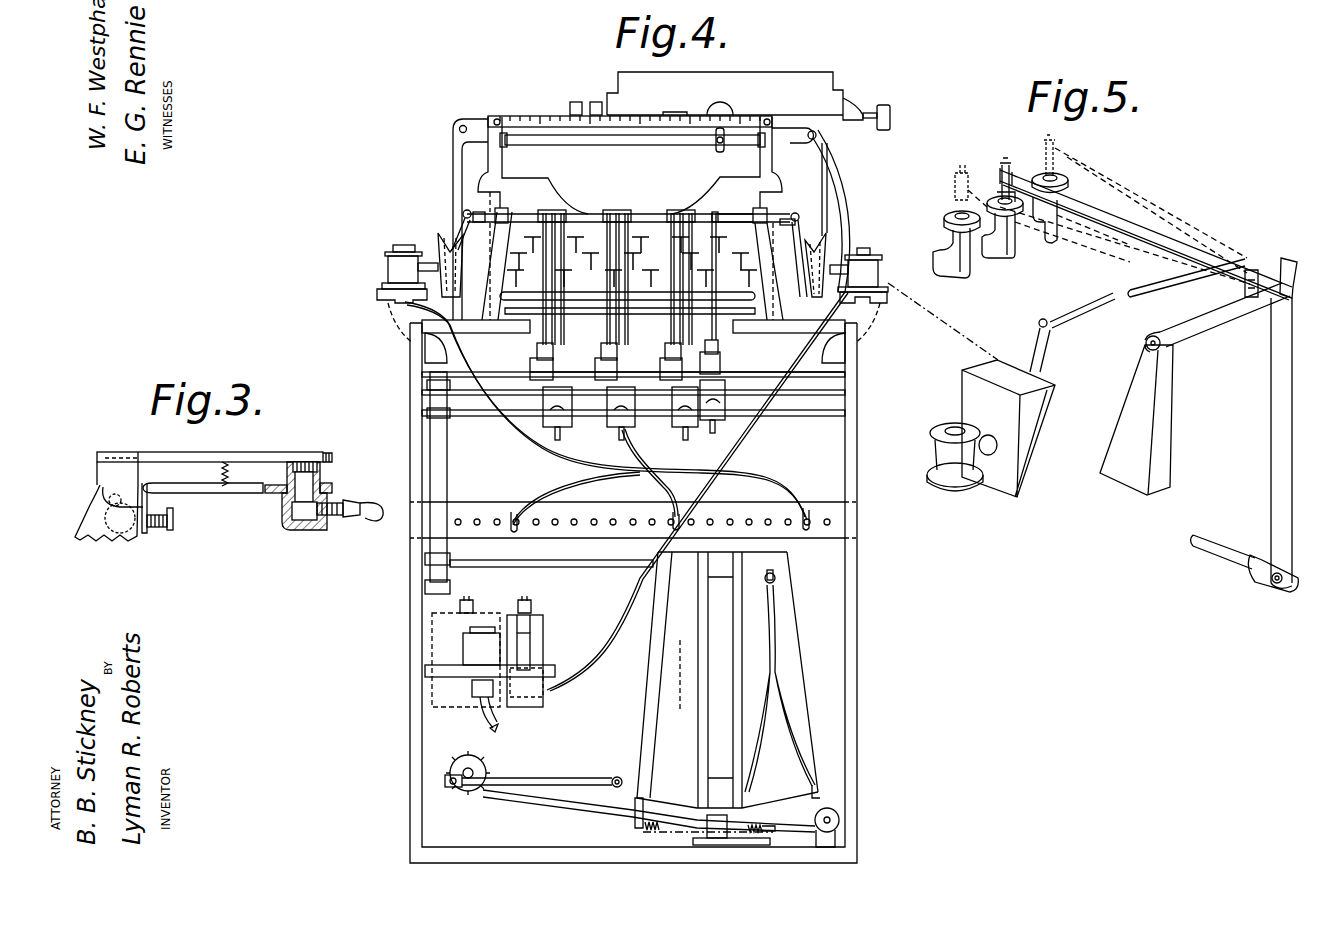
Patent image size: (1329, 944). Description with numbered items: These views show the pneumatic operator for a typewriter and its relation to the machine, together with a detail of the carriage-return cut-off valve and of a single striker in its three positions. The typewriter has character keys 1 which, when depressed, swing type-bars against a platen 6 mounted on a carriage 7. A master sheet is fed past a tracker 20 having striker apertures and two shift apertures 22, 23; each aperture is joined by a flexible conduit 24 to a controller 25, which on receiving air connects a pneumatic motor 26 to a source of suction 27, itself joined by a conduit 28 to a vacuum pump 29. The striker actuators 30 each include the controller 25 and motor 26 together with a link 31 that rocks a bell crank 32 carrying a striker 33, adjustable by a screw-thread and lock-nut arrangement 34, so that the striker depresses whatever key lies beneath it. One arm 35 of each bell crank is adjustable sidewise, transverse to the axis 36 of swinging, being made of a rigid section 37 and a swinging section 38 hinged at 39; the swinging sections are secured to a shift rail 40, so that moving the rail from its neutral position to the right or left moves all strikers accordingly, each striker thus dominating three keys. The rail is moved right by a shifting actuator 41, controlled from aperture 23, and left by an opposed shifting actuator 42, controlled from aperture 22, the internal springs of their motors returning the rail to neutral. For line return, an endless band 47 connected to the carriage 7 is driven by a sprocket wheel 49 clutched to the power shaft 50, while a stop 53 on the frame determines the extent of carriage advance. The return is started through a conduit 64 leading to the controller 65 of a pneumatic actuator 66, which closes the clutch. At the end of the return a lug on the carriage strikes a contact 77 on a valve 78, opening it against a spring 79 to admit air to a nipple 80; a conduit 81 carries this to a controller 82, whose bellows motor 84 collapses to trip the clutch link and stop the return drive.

In FIG. 4, the character key 1 is at (638, 240).
In FIG. 5, the character key 1 is at (978, 210).
In FIG. 4, the platen 6 is at (748, 101).
In FIG. 4, the carriage 7 is at (586, 97).
In FIG. 4, the tracker 20 is at (742, 510).
In FIG. 4, the shift aperture 22 is at (806, 505).
In FIG. 4, the shift aperture 23 is at (515, 510).
In FIG. 4, the conduit 24 is at (660, 490).
In FIG. 4, the controller 25 is at (390, 270).
In FIG. 5, the controller 25 is at (945, 487).
In FIG. 4, the pneumatic motor 26 is at (615, 418).
In FIG. 4, the source of suction 27 is at (687, 358).
In FIG. 4, the conduit 28 is at (420, 350).
In FIG. 4, the vacuum pump 29 is at (650, 685).
In FIG. 4, the striker actuator 30 is at (622, 322).
In FIG. 5, the link 31 is at (1240, 543).
In FIG. 5, the bell crank 32 is at (1271, 478).
In FIG. 5, the striker 33 is at (948, 205).
In FIG. 5, the screw-thread and lock-nut arrangement 34 is at (1040, 175).
In FIG. 5, the arm 35 is at (1148, 225).
In FIG. 4, the axis 36 is at (738, 210).
In FIG. 5, the axis 36 is at (1240, 308).
In FIG. 5, the section 37 is at (1291, 274).
In FIG. 5, the section 38 is at (1170, 250).
In FIG. 5, the hinge 39 is at (1245, 290).
In FIG. 4, the shift rail 40 is at (782, 218).
In FIG. 5, the shift rail 40 is at (1072, 327).
In FIG. 4, the shifting actuator 41 is at (828, 248).
In FIG. 4, the shifting actuator 42 is at (440, 235).
In FIG. 5, the shifting actuator 42 is at (1038, 440).
In FIG. 4, the endless band 47 is at (520, 795).
In FIG. 4, the sprocket wheel 49 is at (484, 762).
In FIG. 4, the power shaft 50 is at (505, 775).
In FIG. 4, the stop 53 is at (716, 148).
In FIG. 4, the conduit 64 is at (498, 727).
In FIG. 4, the controller 65 is at (466, 651).
In FIG. 4, the pneumatic actuator 66 is at (472, 705).
In FIG. 3, the contact 77 is at (125, 535).
In FIG. 3, the valve 78 is at (180, 456).
In FIG. 3, the spring 79 is at (228, 478).
In FIG. 3, the nipple 80 is at (305, 488).
In FIG. 4, the conduit 81 is at (610, 645).
In FIG. 3, the conduit 81 is at (378, 522).
In FIG. 4, the controller 82 is at (545, 652).
In FIG. 4, the bellows motor 84 is at (540, 625).